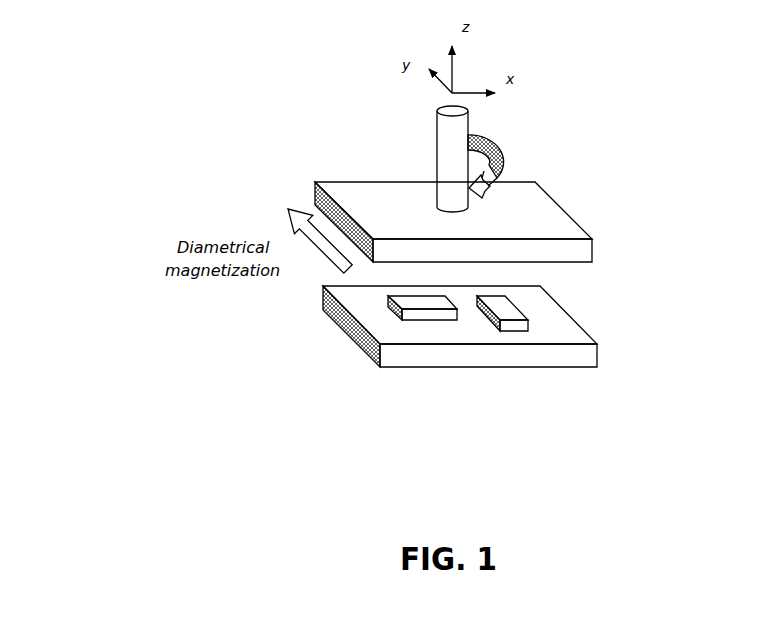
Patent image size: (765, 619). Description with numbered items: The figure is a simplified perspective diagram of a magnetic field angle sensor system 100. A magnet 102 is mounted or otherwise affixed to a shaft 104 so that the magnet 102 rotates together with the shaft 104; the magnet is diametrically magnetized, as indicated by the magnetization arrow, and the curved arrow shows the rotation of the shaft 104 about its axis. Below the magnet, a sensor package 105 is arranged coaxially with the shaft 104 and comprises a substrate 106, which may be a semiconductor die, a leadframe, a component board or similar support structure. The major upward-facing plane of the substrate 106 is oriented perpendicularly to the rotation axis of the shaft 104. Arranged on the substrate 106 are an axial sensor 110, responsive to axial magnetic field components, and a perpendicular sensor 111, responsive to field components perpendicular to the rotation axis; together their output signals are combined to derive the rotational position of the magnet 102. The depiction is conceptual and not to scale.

The sensor system 100 is at (215, 127).
The magnet 102 is at (350, 178).
The shaft 104 is at (437, 125).
The sensor package 105 is at (590, 315).
The substrate 106 is at (543, 358).
The axial sensor 110 is at (502, 325).
The perpendicular sensor 111 is at (422, 303).